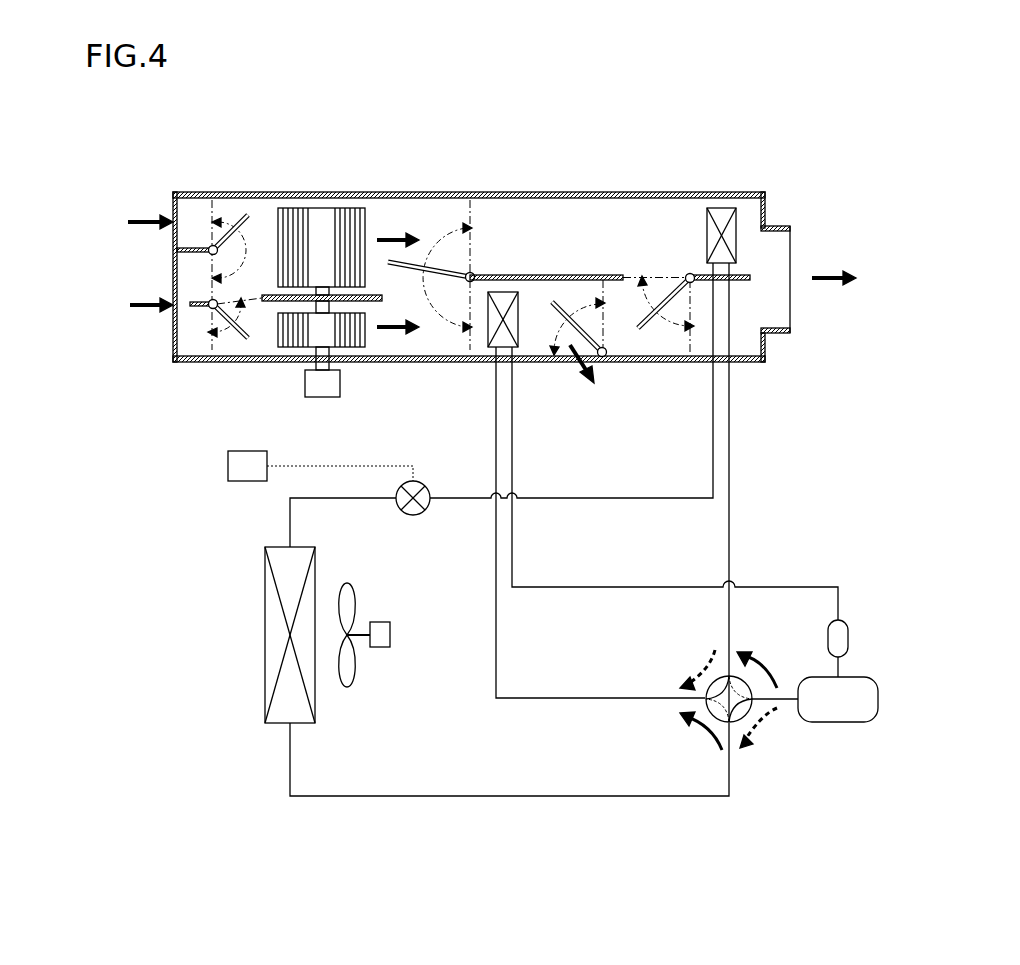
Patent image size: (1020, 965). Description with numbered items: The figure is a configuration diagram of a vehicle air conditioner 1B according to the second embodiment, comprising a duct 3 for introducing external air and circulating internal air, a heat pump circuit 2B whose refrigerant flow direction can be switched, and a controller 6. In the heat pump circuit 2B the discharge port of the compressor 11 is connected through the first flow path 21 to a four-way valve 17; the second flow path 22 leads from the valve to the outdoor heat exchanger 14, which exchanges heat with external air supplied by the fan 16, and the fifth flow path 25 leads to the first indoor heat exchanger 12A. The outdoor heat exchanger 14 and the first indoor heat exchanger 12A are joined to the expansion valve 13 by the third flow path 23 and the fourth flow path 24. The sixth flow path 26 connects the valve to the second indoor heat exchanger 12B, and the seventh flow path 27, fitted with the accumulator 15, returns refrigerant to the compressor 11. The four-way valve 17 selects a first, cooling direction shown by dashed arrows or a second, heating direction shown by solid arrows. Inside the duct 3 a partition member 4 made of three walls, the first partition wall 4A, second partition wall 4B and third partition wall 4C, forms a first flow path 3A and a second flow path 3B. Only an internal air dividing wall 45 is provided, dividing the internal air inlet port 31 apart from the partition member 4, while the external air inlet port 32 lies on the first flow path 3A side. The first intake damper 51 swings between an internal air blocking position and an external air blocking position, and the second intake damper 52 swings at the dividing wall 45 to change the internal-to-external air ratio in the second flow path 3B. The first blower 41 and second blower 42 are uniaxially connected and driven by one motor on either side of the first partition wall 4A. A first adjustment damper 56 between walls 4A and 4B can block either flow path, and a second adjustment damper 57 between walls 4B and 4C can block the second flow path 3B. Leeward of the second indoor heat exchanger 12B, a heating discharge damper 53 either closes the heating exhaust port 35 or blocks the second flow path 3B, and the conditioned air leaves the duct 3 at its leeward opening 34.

The vehicle air conditioner 1B is at (808, 148).
The heat pump circuit 2B is at (623, 802).
The duct 3 is at (750, 362).
The first flow path 3A is at (566, 243).
The second flow path 3B is at (421, 338).
The partition member 4 is at (537, 266).
The first partition wall 4A is at (373, 290).
The second partition wall 4B is at (598, 282).
The third partition wall 4C is at (742, 273).
The controller 6 is at (243, 466).
The compressor 11 is at (840, 722).
The first indoor heat exchanger 12A is at (720, 207).
The second indoor heat exchanger 12B is at (503, 290).
The expansion valve 13 is at (413, 517).
The outdoor heat exchanger 14 is at (265, 637).
The accumulator 15 is at (848, 637).
The fan 16 is at (355, 665).
The four-way valve 17 is at (706, 704).
The first flow path 21 is at (790, 700).
The second flow path 22 is at (482, 797).
The third flow path 23 is at (290, 522).
The fourth flow path 24 is at (613, 498).
The fifth flow path 25 is at (730, 508).
The sixth flow path 26 is at (608, 698).
The seventh flow path 27 is at (838, 587).
The internal air inlet port 31 is at (170, 276).
The external air inlet port 32 is at (165, 203).
The air outlet 34 is at (802, 261).
The heating exhaust port 35 is at (556, 375).
The first blower 41 is at (322, 230).
The second blower 42 is at (320, 335).
The internal air dividing wall 45 is at (203, 308).
The first intake damper 51 is at (237, 217).
The second intake damper 52 is at (232, 337).
The heating discharge damper 53 is at (588, 372).
The first adjustment damper 56 is at (423, 263).
The second adjustment damper 57 is at (662, 297).